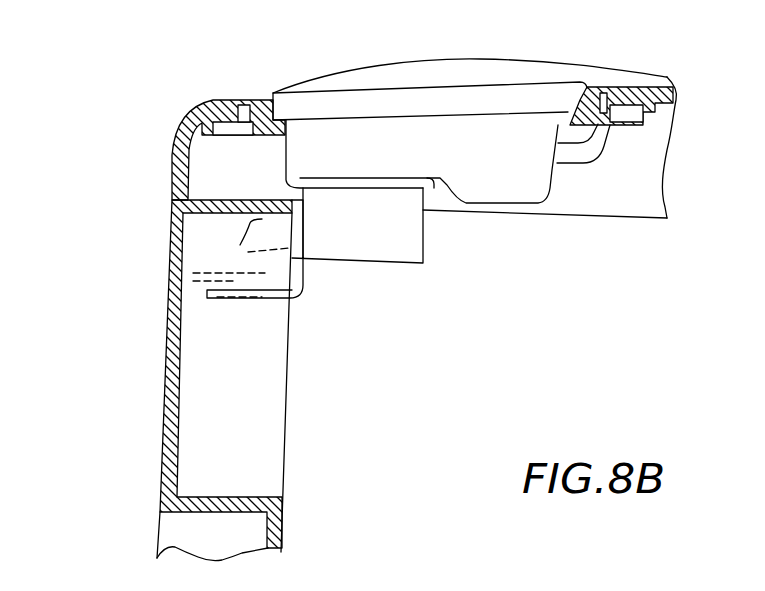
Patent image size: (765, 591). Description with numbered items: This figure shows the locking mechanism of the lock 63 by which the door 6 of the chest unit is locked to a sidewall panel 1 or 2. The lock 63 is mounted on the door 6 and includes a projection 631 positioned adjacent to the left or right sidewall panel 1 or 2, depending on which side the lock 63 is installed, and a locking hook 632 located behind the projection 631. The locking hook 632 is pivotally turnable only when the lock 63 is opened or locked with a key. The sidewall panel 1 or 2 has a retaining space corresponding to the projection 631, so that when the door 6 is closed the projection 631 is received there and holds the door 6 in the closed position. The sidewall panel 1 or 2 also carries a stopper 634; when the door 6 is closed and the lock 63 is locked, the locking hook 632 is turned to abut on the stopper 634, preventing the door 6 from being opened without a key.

The sidewall panel 1 is at (170, 438).
The sidewall panel 2 is at (150, 535).
The door 6 is at (213, 100).
The lock 63 is at (498, 173).
The projection 631 is at (262, 232).
The locking hook 632 is at (313, 300).
The stopper 634 is at (190, 278).